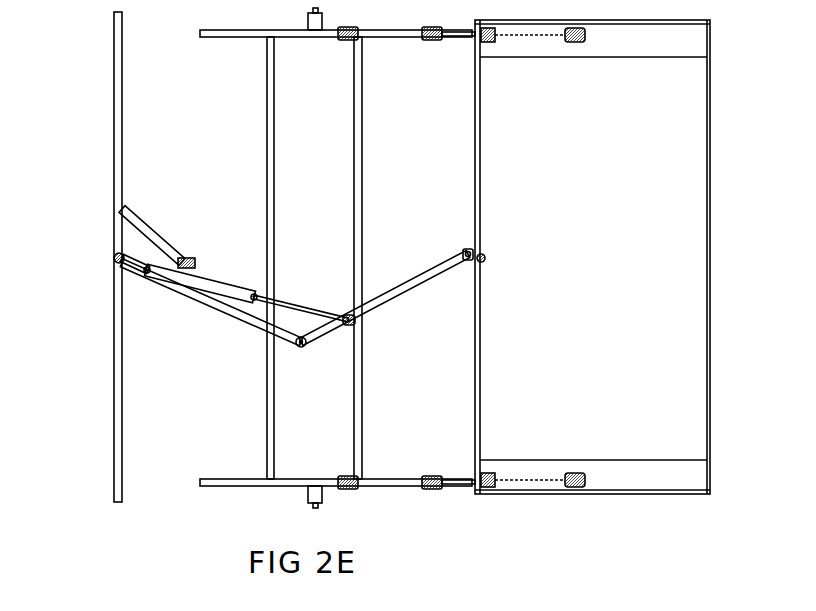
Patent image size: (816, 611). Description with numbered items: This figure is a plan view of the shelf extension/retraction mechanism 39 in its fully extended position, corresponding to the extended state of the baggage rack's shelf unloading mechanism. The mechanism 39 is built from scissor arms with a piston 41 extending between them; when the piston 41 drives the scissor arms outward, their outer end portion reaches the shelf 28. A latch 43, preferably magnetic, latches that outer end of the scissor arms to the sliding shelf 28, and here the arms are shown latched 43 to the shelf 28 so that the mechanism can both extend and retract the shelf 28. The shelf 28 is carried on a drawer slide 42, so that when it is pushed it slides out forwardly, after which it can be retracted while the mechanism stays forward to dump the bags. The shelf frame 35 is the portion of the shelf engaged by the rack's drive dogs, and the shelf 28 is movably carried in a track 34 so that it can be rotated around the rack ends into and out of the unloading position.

The shelf 28 is at (600, 294).
The track 34 is at (113, 407).
The shelf frame 35 is at (362, 425).
The shelf extension/retraction mechanism 39 is at (238, 318).
The piston 41 is at (207, 285).
The drawer slide 42 is at (438, 489).
The latch 43 is at (483, 262).